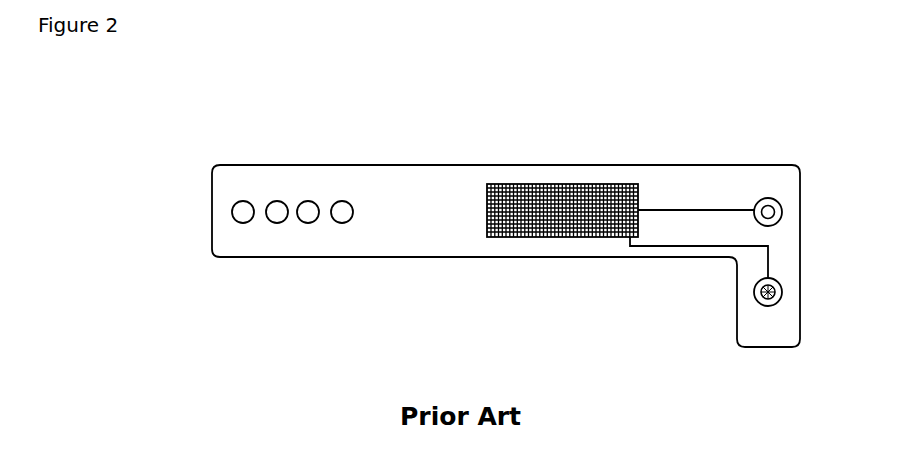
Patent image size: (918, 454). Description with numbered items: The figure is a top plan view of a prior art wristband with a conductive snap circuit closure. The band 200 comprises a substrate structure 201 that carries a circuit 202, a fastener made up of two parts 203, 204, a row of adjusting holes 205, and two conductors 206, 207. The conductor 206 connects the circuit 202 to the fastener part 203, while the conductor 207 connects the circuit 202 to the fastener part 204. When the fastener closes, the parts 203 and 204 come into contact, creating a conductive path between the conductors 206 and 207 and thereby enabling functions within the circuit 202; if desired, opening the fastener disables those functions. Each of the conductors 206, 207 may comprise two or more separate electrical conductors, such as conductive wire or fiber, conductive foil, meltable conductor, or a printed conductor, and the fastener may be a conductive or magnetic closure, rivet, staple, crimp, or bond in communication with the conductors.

The band 200 is at (545, 225).
The substrate structure 201 is at (349, 164).
The circuit 202 is at (569, 184).
The fastener part 203 is at (752, 297).
The fastener part 204 is at (783, 213).
The adjusting holes 205 is at (342, 228).
The conductor 206 is at (678, 247).
The conductor 207 is at (696, 210).